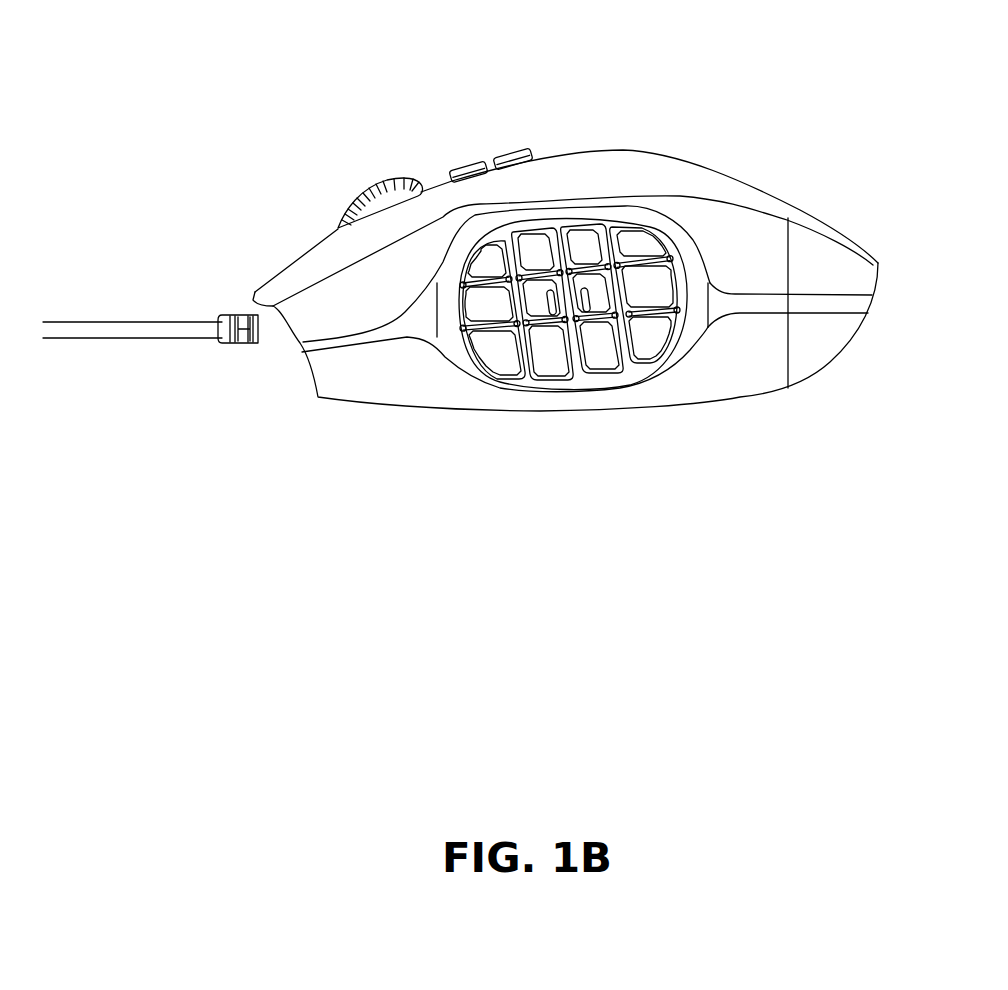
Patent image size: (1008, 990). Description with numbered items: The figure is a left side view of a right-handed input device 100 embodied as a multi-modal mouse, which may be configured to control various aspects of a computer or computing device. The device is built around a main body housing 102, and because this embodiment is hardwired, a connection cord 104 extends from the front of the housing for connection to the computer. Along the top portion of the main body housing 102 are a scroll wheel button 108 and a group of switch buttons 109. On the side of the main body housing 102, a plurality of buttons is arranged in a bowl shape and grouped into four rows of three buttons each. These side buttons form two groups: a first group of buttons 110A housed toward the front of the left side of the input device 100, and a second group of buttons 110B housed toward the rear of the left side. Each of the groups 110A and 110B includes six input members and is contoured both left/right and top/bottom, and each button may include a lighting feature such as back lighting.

The input device 100 is at (280, 603).
The main body housing 102 is at (757, 397).
The connection cord 104 is at (139, 338).
The scroll wheel button 108 is at (373, 183).
The group of switch buttons 109 is at (495, 149).
The first group of buttons 110A is at (587, 387).
The second group of buttons 110B is at (693, 357).